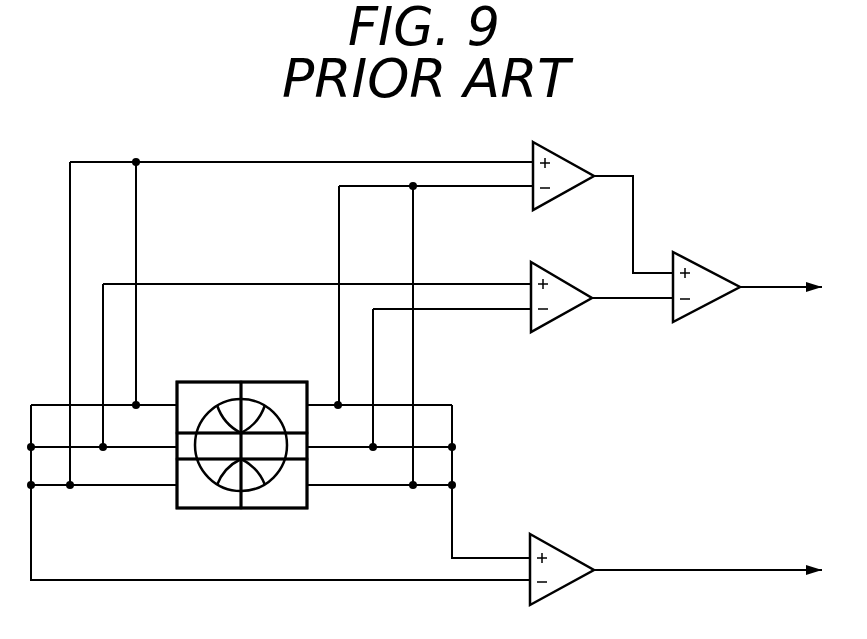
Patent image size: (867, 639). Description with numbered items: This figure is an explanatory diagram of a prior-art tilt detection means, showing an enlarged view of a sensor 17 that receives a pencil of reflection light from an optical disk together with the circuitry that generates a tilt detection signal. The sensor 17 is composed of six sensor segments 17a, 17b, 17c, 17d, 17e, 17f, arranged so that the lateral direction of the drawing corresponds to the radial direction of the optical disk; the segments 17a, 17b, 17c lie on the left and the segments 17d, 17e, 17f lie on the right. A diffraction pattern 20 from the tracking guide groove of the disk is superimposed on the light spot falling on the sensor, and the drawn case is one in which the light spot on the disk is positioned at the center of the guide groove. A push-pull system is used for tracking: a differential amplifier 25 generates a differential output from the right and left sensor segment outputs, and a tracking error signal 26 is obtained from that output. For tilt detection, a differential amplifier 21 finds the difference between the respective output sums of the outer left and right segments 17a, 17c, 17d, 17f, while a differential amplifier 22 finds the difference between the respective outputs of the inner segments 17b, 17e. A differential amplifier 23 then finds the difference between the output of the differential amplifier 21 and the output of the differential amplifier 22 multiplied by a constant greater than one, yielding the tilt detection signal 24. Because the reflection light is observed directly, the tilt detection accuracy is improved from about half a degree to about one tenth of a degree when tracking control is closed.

The sensor 17 is at (241, 431).
The sensor segment 17a is at (204, 388).
The sensor segment 17b is at (188, 453).
The sensor segment 17c is at (204, 500).
The sensor segment 17d is at (285, 388).
The sensor segment 17e is at (298, 453).
The sensor segment 17f is at (262, 503).
The diffraction pattern 20 is at (270, 473).
The differential amplifier 21 is at (567, 153).
The differential amplifier 22 is at (565, 313).
The differential amplifier 23 is at (705, 305).
The tilt detection signal 24 is at (780, 290).
The differential amplifier 25 is at (565, 588).
The tracking error signal 26 is at (777, 573).